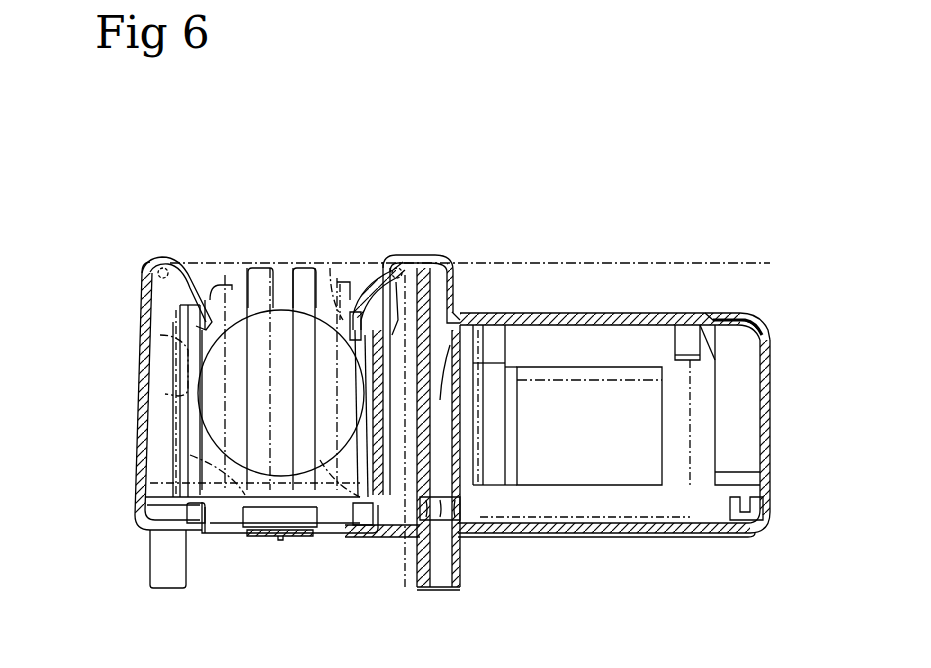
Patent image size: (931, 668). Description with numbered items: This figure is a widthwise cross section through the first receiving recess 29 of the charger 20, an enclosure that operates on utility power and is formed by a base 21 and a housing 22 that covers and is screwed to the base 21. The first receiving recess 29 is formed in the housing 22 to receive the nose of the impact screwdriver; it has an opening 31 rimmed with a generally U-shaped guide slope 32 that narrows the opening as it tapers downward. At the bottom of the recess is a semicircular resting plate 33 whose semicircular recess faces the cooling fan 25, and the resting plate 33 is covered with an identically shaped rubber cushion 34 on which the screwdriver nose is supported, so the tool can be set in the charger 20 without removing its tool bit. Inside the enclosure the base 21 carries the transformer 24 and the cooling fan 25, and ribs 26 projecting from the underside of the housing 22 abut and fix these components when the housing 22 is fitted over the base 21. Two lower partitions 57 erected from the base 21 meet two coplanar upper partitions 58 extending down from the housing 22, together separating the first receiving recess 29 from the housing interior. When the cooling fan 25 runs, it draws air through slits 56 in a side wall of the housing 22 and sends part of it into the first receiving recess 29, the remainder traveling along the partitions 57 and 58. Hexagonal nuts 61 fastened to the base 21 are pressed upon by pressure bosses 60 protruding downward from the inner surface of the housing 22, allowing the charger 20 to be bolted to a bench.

The charger 20 is at (637, 250).
The base 21 is at (715, 535).
The housing 22 is at (762, 318).
The transformer 24 is at (590, 367).
The cooling fan 25 is at (257, 262).
The ribs 26 is at (495, 347).
The first receiving recess 29 is at (288, 255).
The opening 31 is at (230, 262).
The guide slope 32 is at (370, 262).
The resting plate 33 is at (292, 540).
The rubber cushion 34 is at (240, 540).
The slits 56 is at (200, 260).
The lower partitions 57 is at (150, 463).
The upper partitions 58 is at (175, 374).
The pressure bosses 60 is at (438, 383).
The hexagonal nuts 61 is at (440, 510).